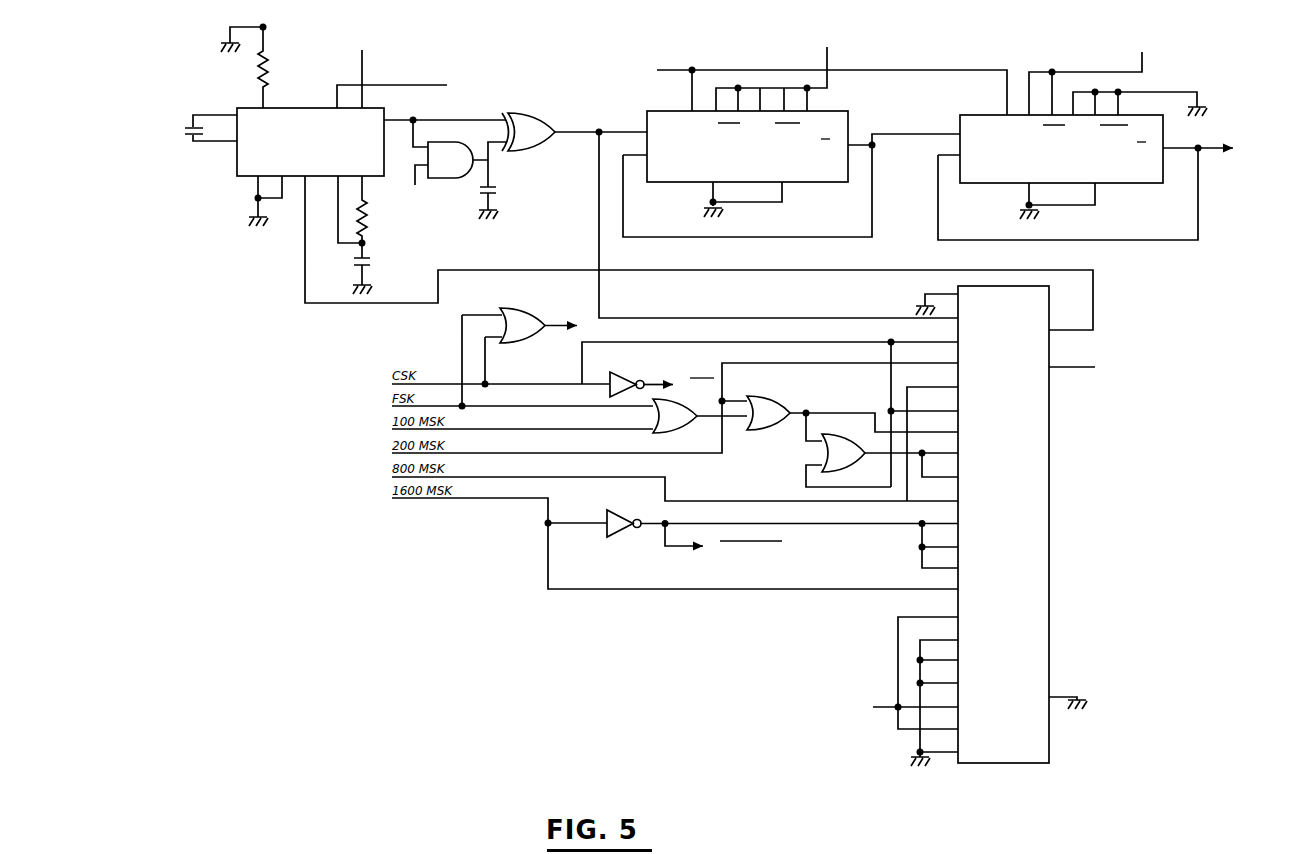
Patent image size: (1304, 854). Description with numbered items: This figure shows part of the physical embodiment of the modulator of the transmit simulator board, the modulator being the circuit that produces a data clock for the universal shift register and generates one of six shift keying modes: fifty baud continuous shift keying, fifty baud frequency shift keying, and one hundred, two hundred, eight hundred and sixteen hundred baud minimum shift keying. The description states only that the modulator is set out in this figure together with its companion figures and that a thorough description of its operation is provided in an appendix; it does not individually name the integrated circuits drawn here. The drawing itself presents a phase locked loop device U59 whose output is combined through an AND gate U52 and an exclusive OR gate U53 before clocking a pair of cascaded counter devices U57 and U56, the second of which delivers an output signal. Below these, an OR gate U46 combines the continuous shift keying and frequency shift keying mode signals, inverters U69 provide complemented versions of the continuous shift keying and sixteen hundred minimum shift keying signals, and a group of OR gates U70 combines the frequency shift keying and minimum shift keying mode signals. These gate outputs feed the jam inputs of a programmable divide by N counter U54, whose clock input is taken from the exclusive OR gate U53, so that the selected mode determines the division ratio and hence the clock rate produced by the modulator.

The 4046 phase-locked loop U59 is at (326, 159).
The 4081 AND gate U52 is at (462, 169).
The 4030 exclusive-OR gate U53 is at (570, 122).
The 4018 counter U57 is at (782, 131).
The 4018 counter U56 is at (1101, 135).
The 4071 OR gate U46 is at (549, 348).
The inverter U69 is at (777, 456).
The 4071 OR gate U70 is at (800, 414).
The 4059 programmable divide-by-N counter U54 is at (982, 524).